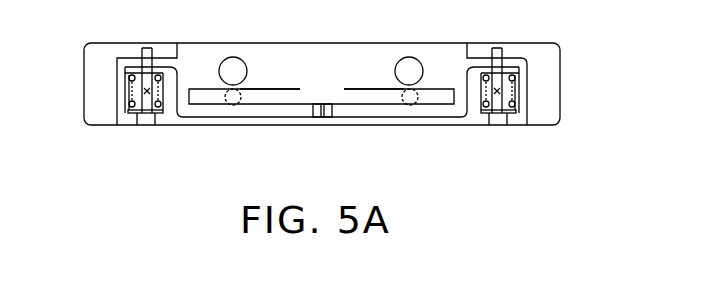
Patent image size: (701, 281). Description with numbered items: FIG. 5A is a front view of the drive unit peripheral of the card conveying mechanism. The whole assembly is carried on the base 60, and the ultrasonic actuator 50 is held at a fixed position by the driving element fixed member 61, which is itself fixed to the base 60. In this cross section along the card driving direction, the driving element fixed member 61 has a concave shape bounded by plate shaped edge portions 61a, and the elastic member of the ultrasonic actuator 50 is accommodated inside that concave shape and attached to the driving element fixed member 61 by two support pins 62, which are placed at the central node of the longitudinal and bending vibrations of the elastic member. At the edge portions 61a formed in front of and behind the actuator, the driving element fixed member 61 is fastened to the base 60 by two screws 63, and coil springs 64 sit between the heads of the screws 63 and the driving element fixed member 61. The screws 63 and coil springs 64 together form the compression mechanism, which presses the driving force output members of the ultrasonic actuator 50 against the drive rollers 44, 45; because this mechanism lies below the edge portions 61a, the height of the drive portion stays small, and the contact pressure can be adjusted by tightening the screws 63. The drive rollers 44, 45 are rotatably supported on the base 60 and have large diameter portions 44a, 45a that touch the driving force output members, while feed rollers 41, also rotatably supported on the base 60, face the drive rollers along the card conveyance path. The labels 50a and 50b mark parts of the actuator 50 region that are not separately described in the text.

The base 60 is at (545, 53).
The driving element fixed member 61 is at (178, 121).
The plate shaped edge portion 61a is at (162, 67).
The screw 63 is at (147, 125).
The coil spring 64 is at (132, 99).
The ultrasonic actuator 50 is at (305, 95).
The bar upper surface right 50a is at (420, 84).
The bar upper surface left 50b is at (250, 84).
The support pin 62 is at (322, 120).
The drive roller 45 is at (232, 72).
The large diameter portion 45a is at (237, 63).
The drive roller 44 is at (408, 75).
The large diameter portion 44a is at (408, 62).
The feed roller 41 is at (228, 107).